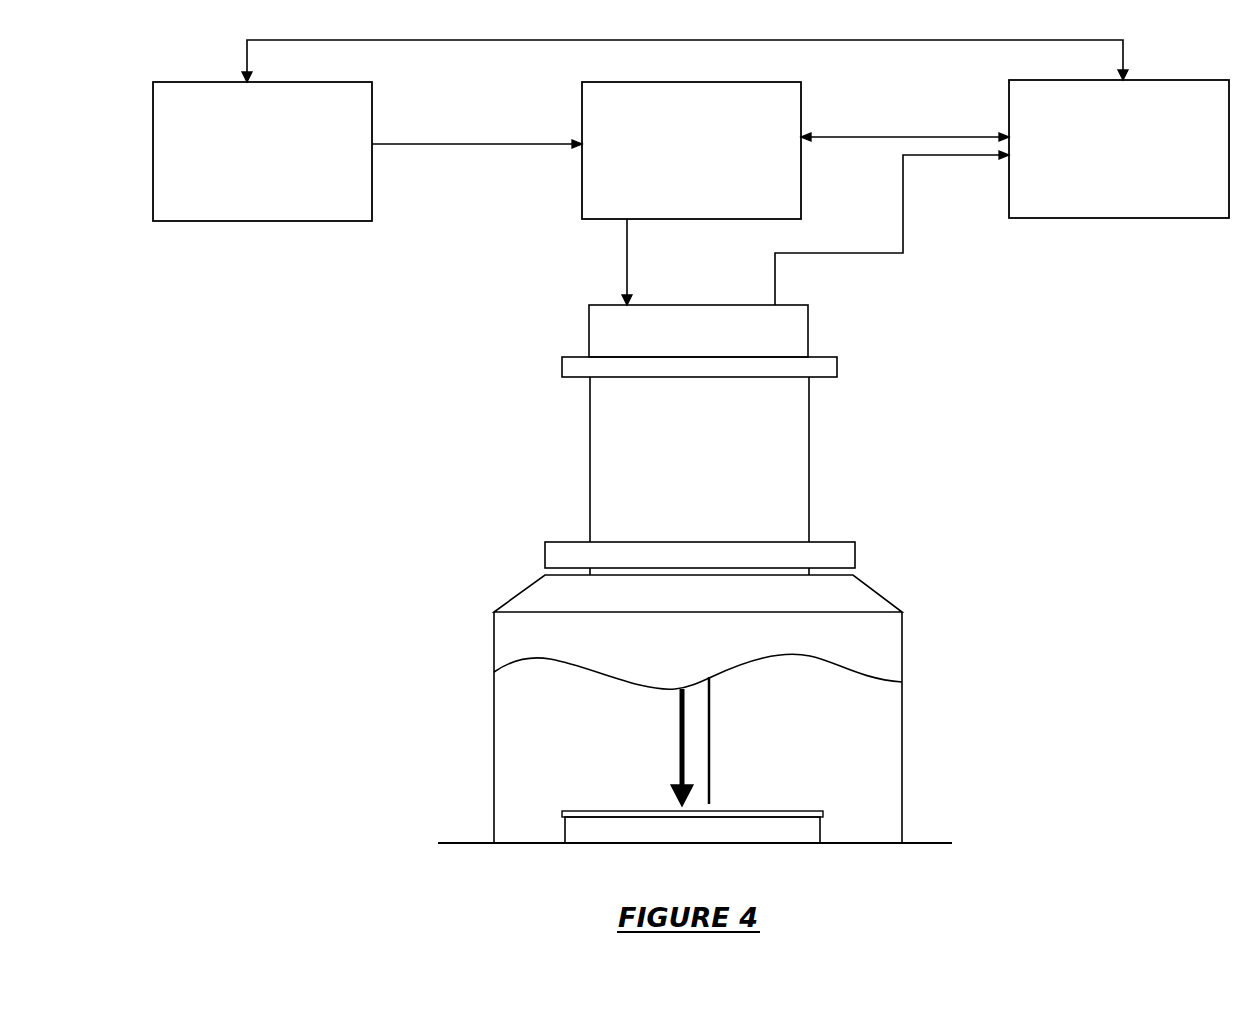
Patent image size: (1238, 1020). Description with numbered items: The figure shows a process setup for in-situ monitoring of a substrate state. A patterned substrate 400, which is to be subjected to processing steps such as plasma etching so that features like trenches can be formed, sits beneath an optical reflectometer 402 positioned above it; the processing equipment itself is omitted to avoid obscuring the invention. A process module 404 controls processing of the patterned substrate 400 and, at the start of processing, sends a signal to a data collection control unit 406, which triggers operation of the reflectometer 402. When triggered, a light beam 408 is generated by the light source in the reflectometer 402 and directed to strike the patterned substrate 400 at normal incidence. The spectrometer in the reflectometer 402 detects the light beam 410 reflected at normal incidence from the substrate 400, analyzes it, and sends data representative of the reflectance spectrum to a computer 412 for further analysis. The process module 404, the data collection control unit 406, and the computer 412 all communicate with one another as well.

The patterned substrate 400 is at (823, 827).
The optical reflectometer 402 is at (809, 457).
The process module 404 is at (262, 151).
The data collection control unit 406 is at (691, 150).
The light beam 408 is at (678, 727).
The reflected light beam 410 is at (709, 727).
The computer 412 is at (1119, 149).